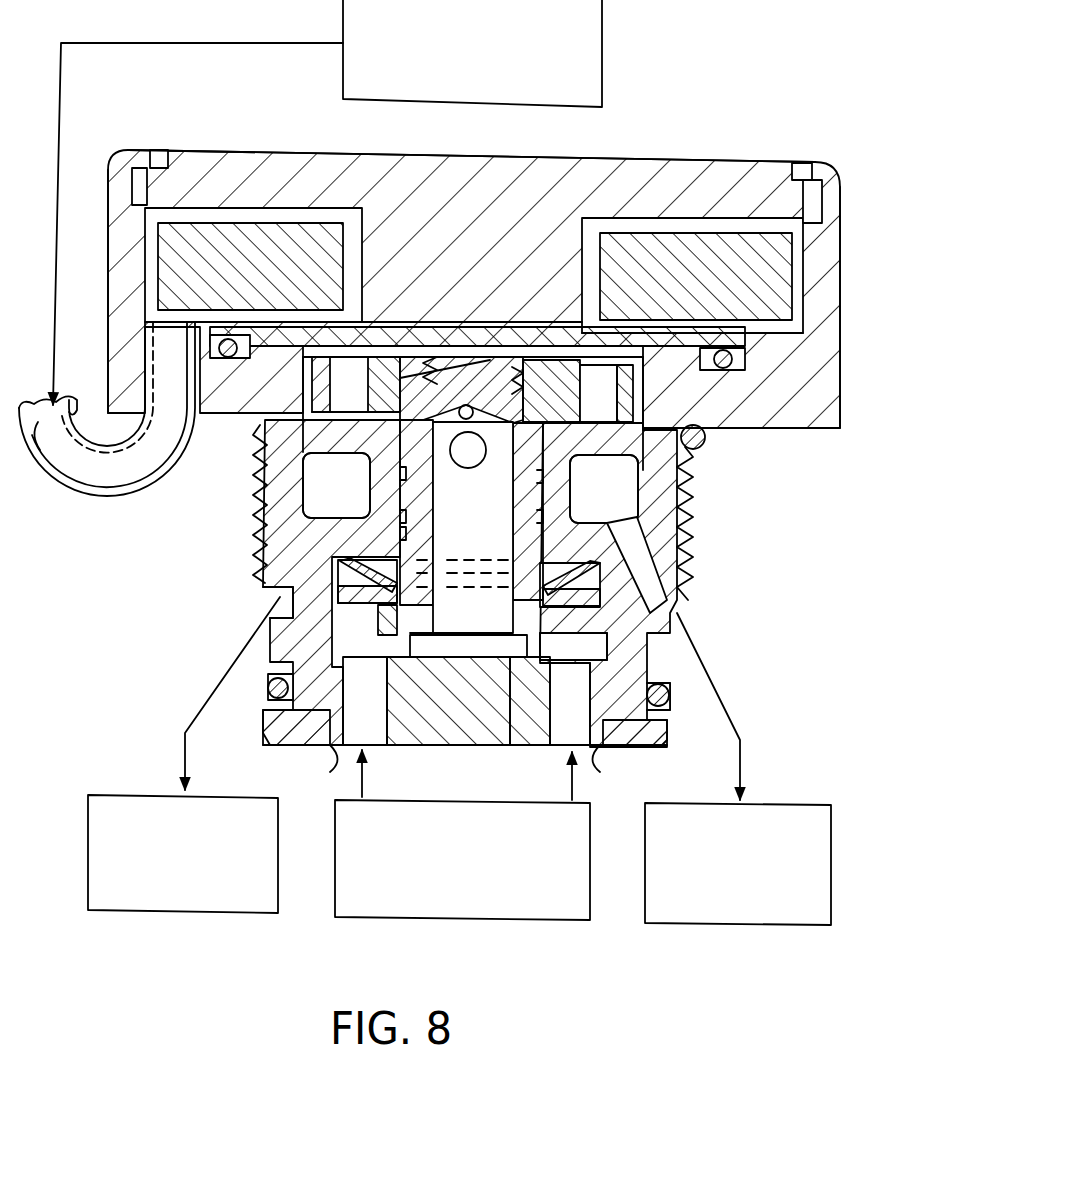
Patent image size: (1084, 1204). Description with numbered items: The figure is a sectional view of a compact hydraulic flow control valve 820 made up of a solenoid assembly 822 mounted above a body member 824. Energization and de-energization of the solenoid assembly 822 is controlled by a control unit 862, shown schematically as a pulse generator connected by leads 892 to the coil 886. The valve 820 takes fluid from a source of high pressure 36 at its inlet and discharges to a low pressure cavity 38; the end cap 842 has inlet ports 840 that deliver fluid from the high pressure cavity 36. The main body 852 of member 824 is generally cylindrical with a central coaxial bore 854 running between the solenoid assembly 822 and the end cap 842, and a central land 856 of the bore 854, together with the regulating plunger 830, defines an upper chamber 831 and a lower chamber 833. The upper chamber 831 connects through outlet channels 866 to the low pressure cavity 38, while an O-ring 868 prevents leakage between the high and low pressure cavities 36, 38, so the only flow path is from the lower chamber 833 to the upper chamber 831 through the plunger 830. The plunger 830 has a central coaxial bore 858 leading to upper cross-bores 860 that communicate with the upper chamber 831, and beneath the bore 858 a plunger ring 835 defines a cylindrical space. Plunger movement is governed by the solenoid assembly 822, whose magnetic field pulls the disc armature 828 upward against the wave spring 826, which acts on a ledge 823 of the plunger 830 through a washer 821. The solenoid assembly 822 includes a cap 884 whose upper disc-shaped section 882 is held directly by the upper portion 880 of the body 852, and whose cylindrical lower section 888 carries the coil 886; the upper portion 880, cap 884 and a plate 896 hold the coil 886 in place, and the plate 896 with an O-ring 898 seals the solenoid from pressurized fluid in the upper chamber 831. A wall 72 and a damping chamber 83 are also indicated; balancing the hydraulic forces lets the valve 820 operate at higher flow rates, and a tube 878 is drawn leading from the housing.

The source of high pressure 36 is at (438, 877).
The low pressure cavity 38 is at (158, 872).
The wall 72 is at (466, 405).
The damping chamber 83 is at (650, 362).
The compact hydraulic flow control valve 820 is at (713, 600).
The washer 821 is at (257, 657).
The solenoid assembly 822 is at (848, 300).
The ledge 823 is at (313, 740).
The body member 824 is at (250, 567).
The wave spring 826 is at (565, 590).
The disc armature 828 is at (398, 377).
The regulating plunger 830 is at (420, 483).
The upper chamber 831 is at (352, 486).
The lower chamber 833 is at (560, 660).
The plunger ring 835 is at (513, 727).
The inlet ports 840 is at (350, 737).
The end cap 842 is at (447, 730).
The main body 852 is at (660, 543).
The central coaxial bore 854 is at (400, 560).
The central land 856 is at (395, 572).
The central coaxial bore of plunger 858 is at (513, 527).
The upper cross-bores 860 is at (263, 507).
The control unit 862 is at (432, 54).
The outlet channels 866 is at (267, 597).
The O-ring 868 is at (660, 707).
The tube 878 is at (400, 357).
The upper portion 880 is at (107, 263).
The upper disc-shaped section 882 is at (733, 173).
The cap 884 is at (680, 180).
The coil 886 is at (777, 268).
The lower section 888 is at (553, 293).
The leads 892 is at (58, 466).
The plate 896 is at (370, 320).
The O-ring 898 is at (600, 355).